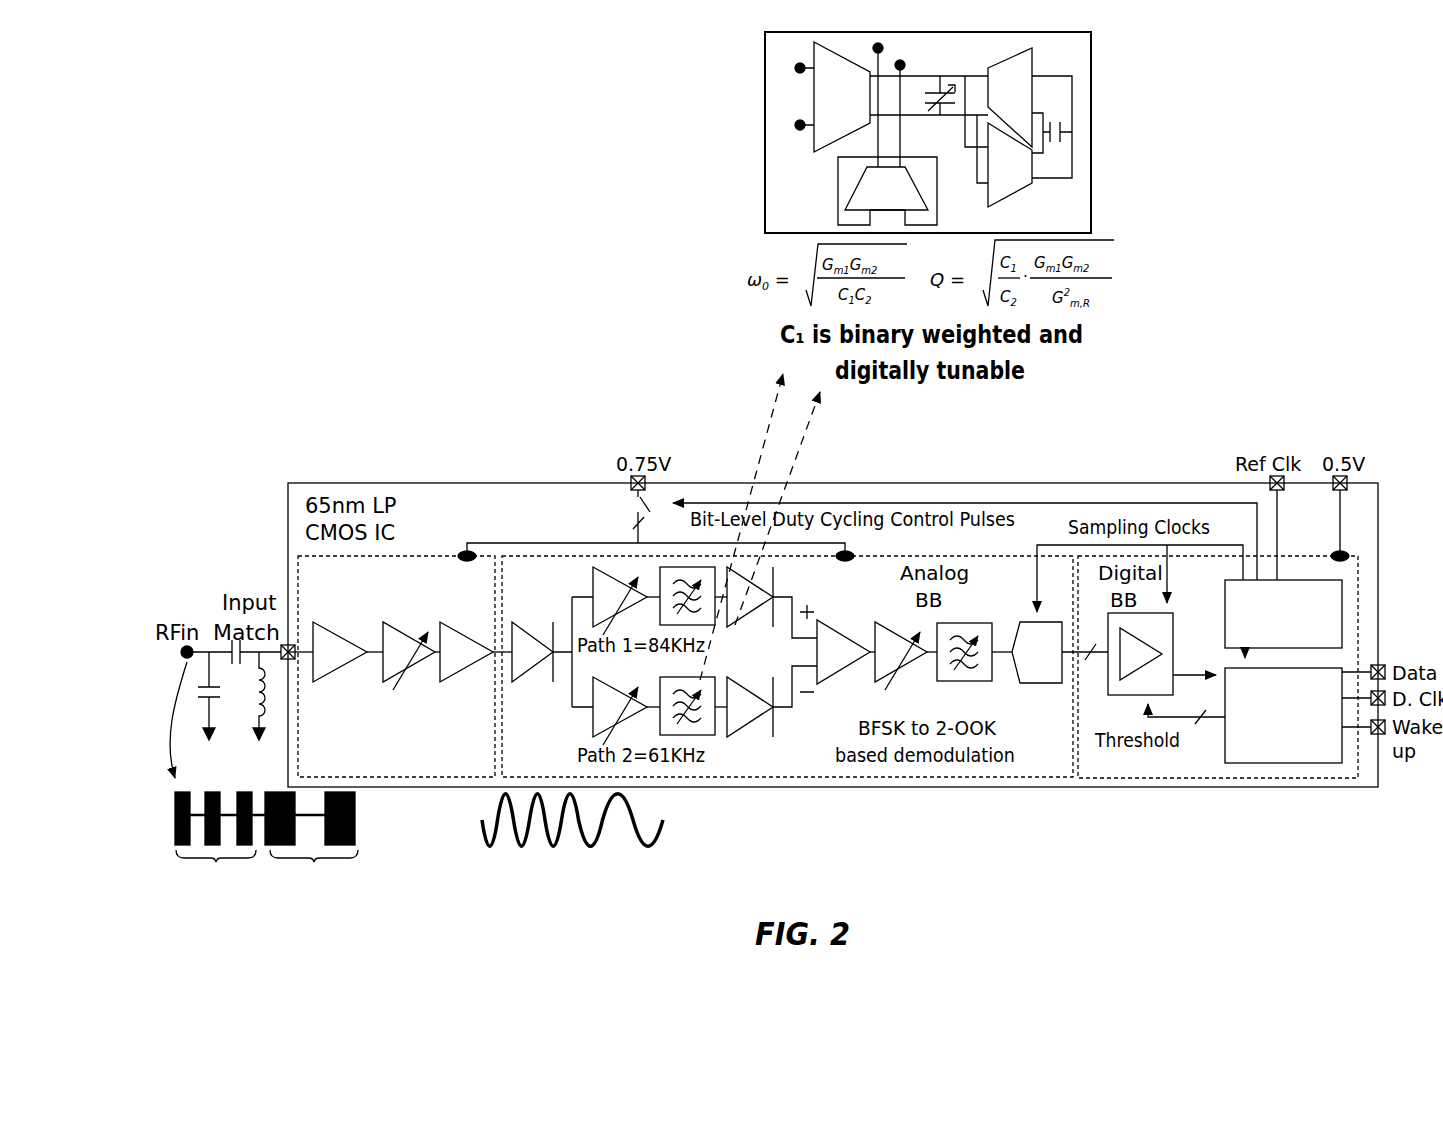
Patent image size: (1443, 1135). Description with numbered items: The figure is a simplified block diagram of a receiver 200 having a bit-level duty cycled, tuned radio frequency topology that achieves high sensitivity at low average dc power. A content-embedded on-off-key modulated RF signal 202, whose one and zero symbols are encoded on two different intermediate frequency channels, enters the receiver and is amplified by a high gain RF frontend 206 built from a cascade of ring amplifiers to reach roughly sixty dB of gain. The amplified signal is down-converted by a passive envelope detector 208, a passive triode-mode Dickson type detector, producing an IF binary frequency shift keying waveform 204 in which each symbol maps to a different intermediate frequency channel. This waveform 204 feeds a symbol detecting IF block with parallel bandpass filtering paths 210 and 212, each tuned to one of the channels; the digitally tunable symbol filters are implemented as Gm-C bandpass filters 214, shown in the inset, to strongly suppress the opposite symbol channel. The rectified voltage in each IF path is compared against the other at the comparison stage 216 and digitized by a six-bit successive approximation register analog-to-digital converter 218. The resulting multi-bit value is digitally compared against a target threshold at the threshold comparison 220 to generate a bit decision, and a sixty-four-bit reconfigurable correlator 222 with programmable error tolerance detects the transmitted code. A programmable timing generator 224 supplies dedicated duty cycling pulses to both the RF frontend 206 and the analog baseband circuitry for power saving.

The receiver 200 is at (302, 412).
The CE-OOK modulated RF signal 202 is at (190, 885).
The IF BFSK waveform 204 is at (692, 855).
The RF frontend 206 is at (413, 601).
The passive envelope detector 208 is at (538, 626).
The bandpass filtering path 210 is at (803, 571).
The bandpass filtering path 212 is at (737, 774).
The Gm-C bandpass filter 214 is at (763, 135).
The comparison of rectified voltages 216 is at (849, 631).
The SAR analog-to-digital converter 218 is at (1045, 684).
The digital threshold comparison 220 is at (1176, 614).
The reconfigurable correlator 222 is at (1286, 763).
The programmable timing generator 224 is at (1335, 600).